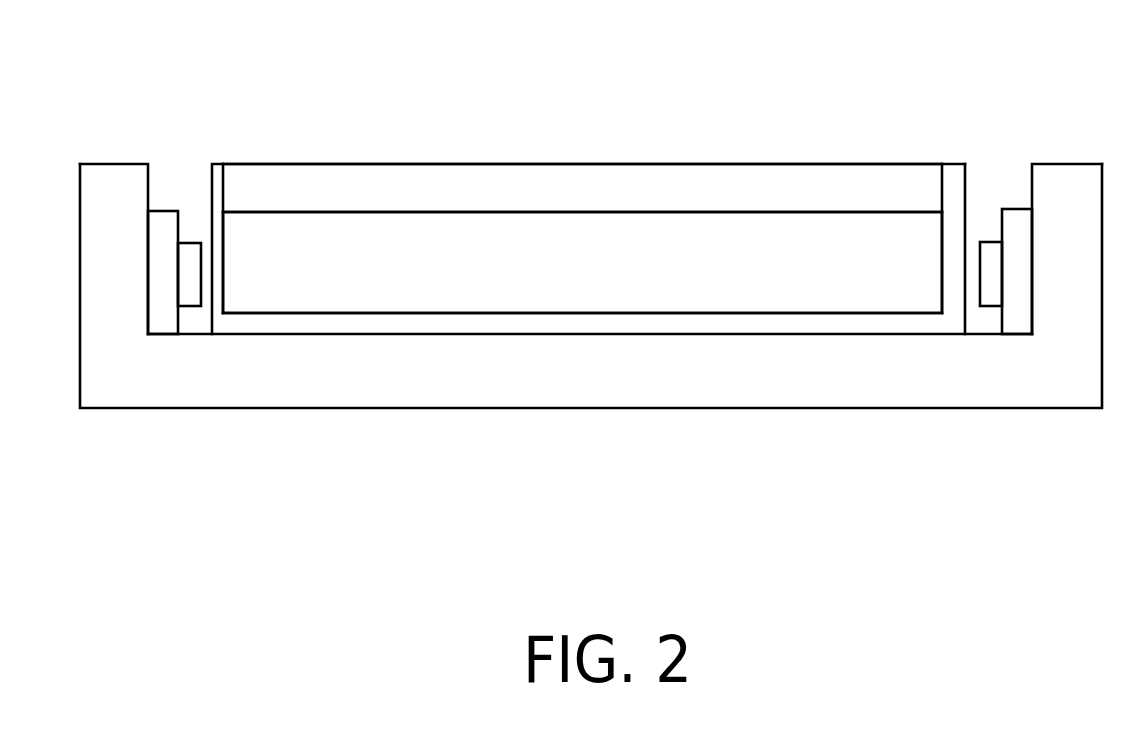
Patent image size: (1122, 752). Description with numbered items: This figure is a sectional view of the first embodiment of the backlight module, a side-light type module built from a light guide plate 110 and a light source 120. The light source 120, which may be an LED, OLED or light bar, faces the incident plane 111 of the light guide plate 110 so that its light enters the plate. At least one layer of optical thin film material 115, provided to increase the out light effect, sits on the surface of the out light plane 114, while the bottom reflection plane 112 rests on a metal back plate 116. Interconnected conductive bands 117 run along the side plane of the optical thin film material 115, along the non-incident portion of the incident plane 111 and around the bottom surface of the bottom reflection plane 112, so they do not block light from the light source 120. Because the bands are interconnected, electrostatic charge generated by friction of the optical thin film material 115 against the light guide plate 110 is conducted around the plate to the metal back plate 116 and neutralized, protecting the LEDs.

The light guide plate 110 is at (815, 237).
The incident plane 111 is at (223, 247).
The bottom reflection plane 112 is at (673, 335).
The out light plane 114 is at (592, 212).
The optical thin film material 115 is at (397, 183).
The metal back plate 116 is at (385, 377).
The conductive bands 117 is at (948, 185).
The light source 120 is at (160, 243).